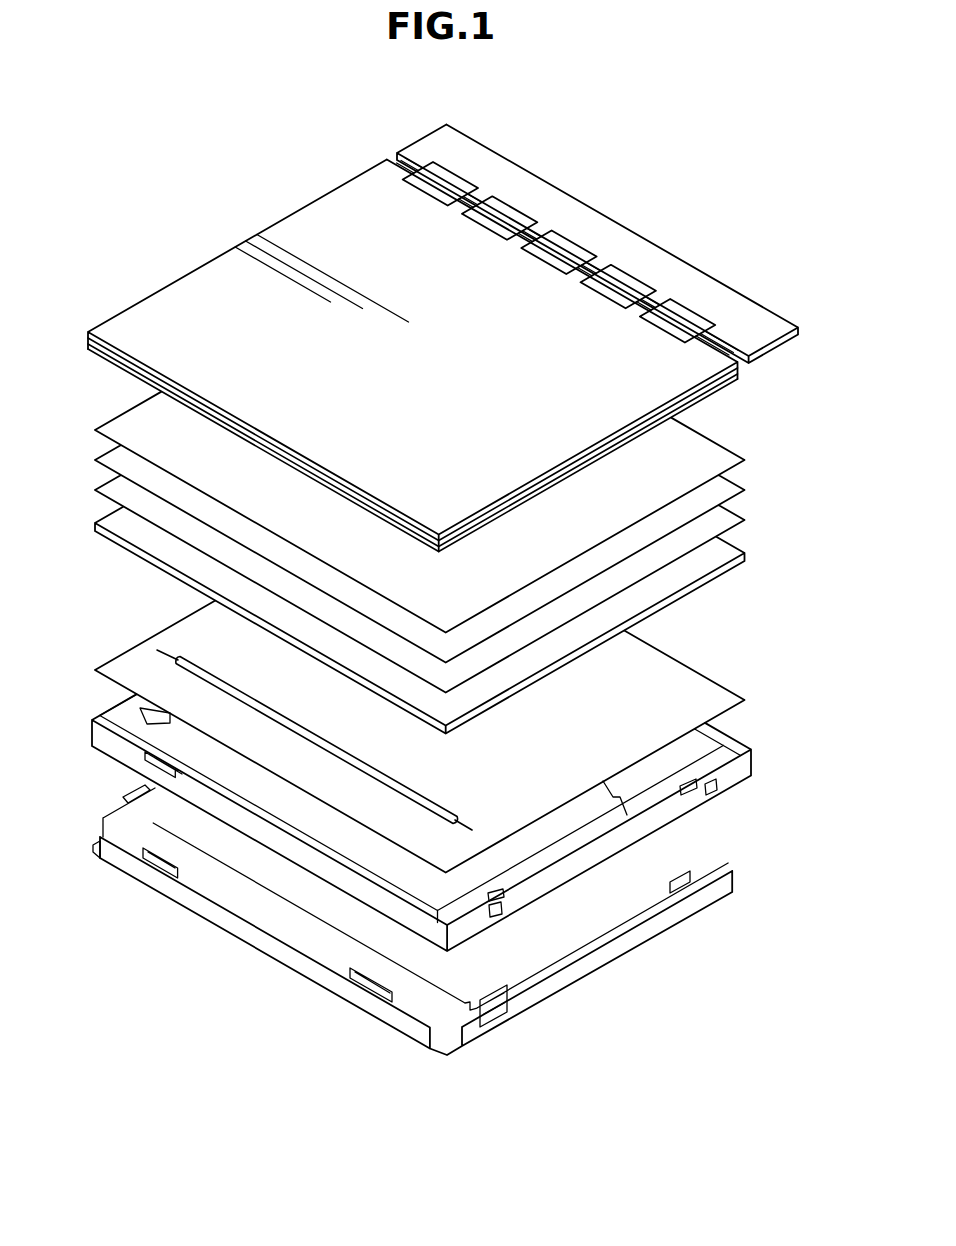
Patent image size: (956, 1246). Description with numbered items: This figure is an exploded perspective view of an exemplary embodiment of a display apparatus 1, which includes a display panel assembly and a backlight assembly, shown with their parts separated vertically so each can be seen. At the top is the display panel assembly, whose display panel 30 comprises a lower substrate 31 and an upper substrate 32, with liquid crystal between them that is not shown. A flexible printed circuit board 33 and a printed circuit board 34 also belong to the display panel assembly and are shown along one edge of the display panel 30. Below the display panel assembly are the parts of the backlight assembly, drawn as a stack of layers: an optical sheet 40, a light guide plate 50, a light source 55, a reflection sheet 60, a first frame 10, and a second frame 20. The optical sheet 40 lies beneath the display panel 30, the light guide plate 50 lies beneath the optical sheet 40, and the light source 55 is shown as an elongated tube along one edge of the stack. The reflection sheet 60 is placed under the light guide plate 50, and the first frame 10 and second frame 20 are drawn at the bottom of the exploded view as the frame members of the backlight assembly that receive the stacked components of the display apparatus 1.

The display apparatus 1 is at (458, 1104).
The first frame 10 is at (762, 747).
The second frame 20 is at (743, 882).
The display panel 30 is at (471, 356).
The lower substrate 31 is at (740, 375).
The upper substrate 32 is at (740, 366).
The flexible printed circuit board 33 is at (681, 317).
The printed circuit board 34 is at (713, 307).
The optical sheet 40 is at (750, 458).
The light guide plate 50 is at (733, 542).
The light source 55 is at (177, 661).
The reflection sheet 60 is at (722, 698).